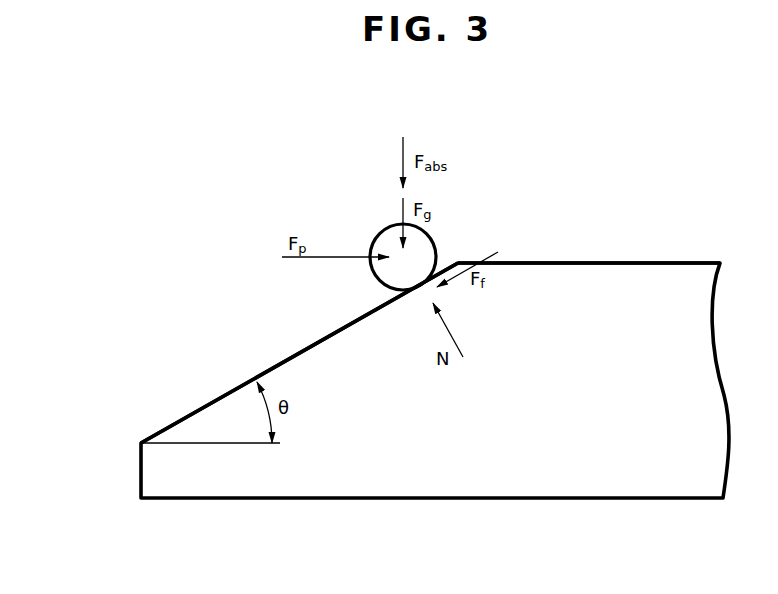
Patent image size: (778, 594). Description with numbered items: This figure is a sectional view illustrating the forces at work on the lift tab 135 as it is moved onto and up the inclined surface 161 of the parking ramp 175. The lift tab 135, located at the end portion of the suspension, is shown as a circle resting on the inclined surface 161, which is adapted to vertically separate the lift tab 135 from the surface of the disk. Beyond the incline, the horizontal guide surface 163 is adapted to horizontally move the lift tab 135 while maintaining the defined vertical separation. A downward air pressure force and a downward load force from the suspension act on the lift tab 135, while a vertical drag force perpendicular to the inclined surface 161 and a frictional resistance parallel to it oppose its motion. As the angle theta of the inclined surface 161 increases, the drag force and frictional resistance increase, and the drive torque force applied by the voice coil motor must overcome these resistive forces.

The lift tab 135 is at (437, 245).
The inclined surface 161 is at (292, 352).
The horizontal guide surface 163 is at (642, 263).
The parking ramp 175 is at (128, 518).